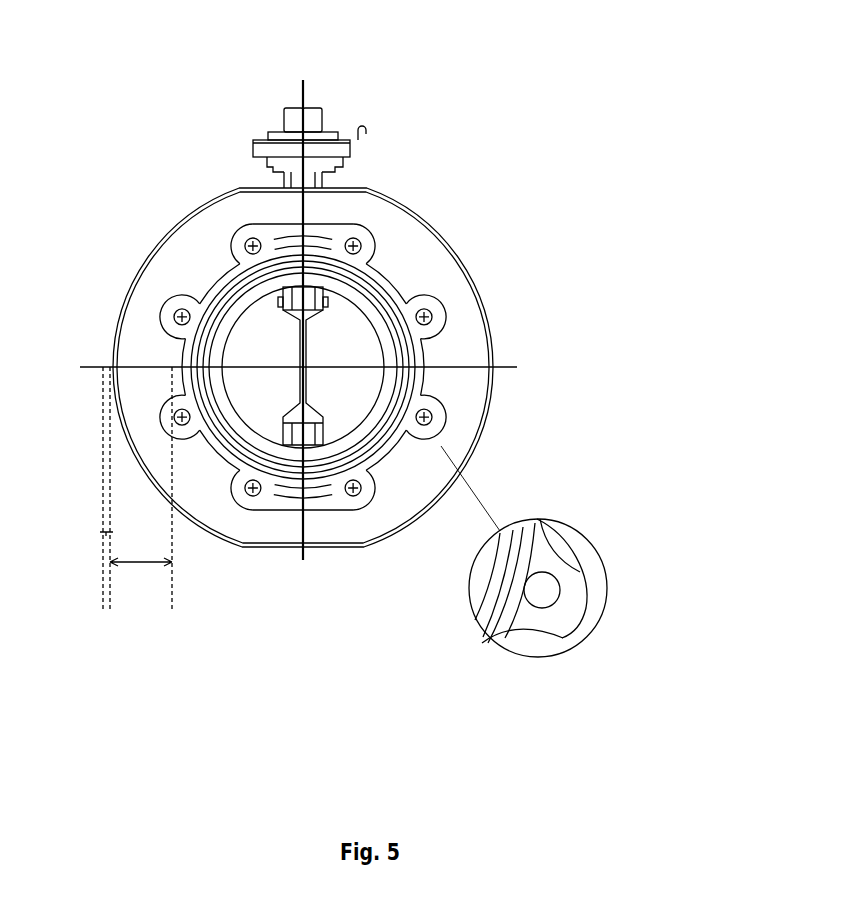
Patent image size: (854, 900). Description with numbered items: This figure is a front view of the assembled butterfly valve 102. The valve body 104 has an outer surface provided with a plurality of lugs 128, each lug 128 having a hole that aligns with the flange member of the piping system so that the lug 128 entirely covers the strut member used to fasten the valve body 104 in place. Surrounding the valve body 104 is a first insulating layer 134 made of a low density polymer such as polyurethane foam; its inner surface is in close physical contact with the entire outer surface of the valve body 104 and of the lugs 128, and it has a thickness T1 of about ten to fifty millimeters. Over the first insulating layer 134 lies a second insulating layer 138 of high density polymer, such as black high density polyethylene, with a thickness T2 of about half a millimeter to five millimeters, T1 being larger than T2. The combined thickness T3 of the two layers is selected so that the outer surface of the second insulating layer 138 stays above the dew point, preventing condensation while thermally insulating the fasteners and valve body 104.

The butterfly valve 102 is at (368, 295).
The valve body 104 is at (265, 227).
The second insulating layer 138 is at (423, 224).
The first insulating layer 134 is at (438, 282).
The lug 128 is at (558, 633).
The thickness of the first insulating layer T1 is at (140, 567).
The thickness of the second insulating layer T2 is at (102, 533).
The combined thickness T3 is at (117, 694).